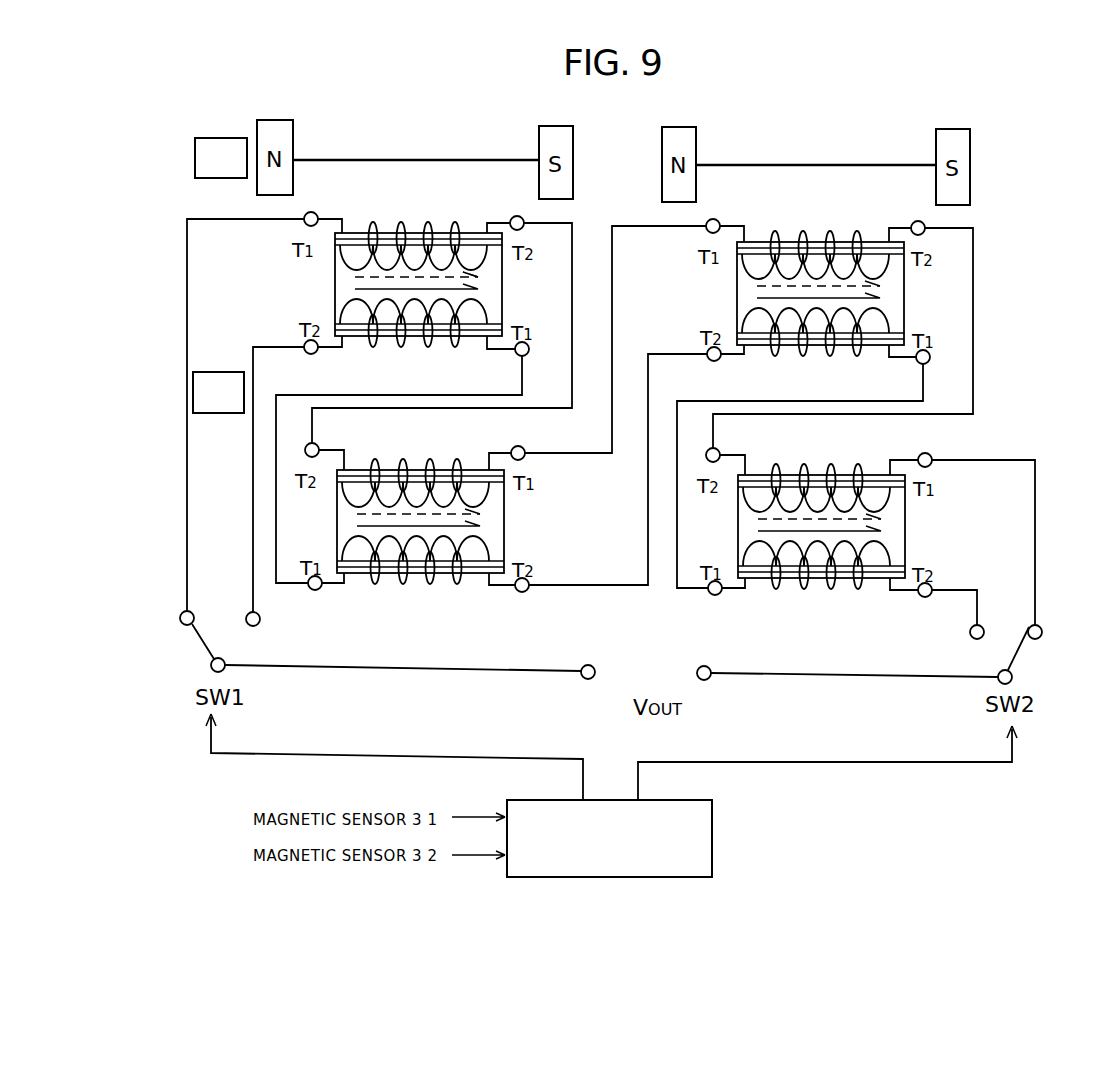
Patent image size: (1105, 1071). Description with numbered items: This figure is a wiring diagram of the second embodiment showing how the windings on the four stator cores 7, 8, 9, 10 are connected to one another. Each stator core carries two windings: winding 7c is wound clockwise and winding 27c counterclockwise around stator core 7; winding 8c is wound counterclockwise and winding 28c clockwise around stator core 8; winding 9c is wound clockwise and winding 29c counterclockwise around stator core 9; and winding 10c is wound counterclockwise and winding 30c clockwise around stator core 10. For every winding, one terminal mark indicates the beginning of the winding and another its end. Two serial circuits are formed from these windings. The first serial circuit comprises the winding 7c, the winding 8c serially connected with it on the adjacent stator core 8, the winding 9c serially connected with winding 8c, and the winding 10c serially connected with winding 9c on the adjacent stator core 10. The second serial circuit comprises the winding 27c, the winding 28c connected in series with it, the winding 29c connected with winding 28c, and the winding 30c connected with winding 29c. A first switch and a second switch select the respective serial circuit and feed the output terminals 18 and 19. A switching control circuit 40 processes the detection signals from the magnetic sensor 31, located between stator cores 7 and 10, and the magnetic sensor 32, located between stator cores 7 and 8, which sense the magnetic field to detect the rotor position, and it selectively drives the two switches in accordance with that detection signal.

The stator core 7 is at (323, 292).
The stator core 8 is at (515, 526).
The stator core 9 is at (725, 301).
The stator core 10 is at (916, 532).
The winding 7c is at (413, 234).
The winding 27c is at (413, 342).
The winding 8c is at (415, 469).
The winding 28c is at (415, 579).
The winding 9c is at (815, 241).
The winding 29c is at (815, 349).
The winding 10c is at (816, 473).
The winding 30c is at (816, 584).
The output terminal 18 is at (583, 666).
The output terminal 19 is at (709, 667).
The magnetic sensor 31 is at (195, 155).
The magnetic sensor 32 is at (232, 413).
The switching control circuit 40 is at (713, 813).